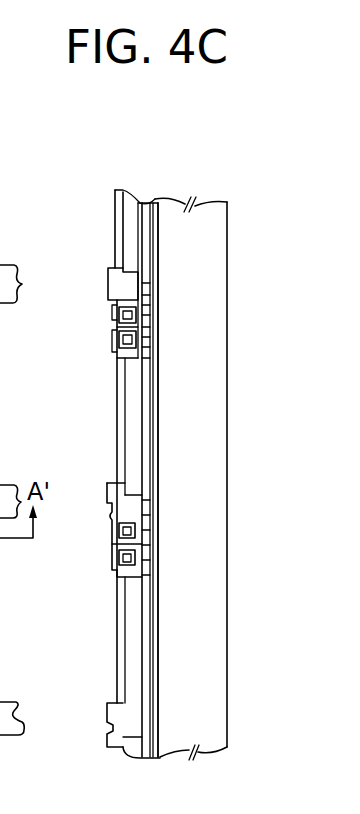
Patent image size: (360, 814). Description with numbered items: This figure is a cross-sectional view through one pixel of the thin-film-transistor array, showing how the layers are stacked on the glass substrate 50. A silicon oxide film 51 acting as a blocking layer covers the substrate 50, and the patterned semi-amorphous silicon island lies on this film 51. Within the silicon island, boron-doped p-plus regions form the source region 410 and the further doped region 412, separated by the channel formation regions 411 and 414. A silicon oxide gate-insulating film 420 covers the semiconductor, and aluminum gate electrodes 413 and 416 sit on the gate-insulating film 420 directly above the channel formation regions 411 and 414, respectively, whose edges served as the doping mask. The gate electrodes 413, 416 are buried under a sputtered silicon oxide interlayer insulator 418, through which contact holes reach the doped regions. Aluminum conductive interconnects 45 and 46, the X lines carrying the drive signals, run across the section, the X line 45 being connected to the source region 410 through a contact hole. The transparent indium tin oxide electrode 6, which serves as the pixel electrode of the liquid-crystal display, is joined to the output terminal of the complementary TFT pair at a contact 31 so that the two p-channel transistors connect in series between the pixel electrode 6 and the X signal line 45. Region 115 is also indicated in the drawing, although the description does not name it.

The glass substrate 50 is at (176, 209).
The silicon oxide film 51 is at (155, 199).
The conductive interconnect 45 is at (108, 276).
The interlayer insulator 418 is at (115, 310).
The gate electrode 413 is at (116, 318).
The gate-insulating film 420 is at (116, 327).
The gate electrode 416 is at (115, 343).
The contact 31 is at (118, 358).
The transparent electrode 6 is at (116, 435).
The conductive interconnect 46 is at (108, 510).
The source region 410 is at (148, 278).
The channel formation region 411 is at (155, 307).
The doped region 412 is at (150, 327).
The channel formation region 414 is at (157, 347).
The groove 115 is at (158, 363).